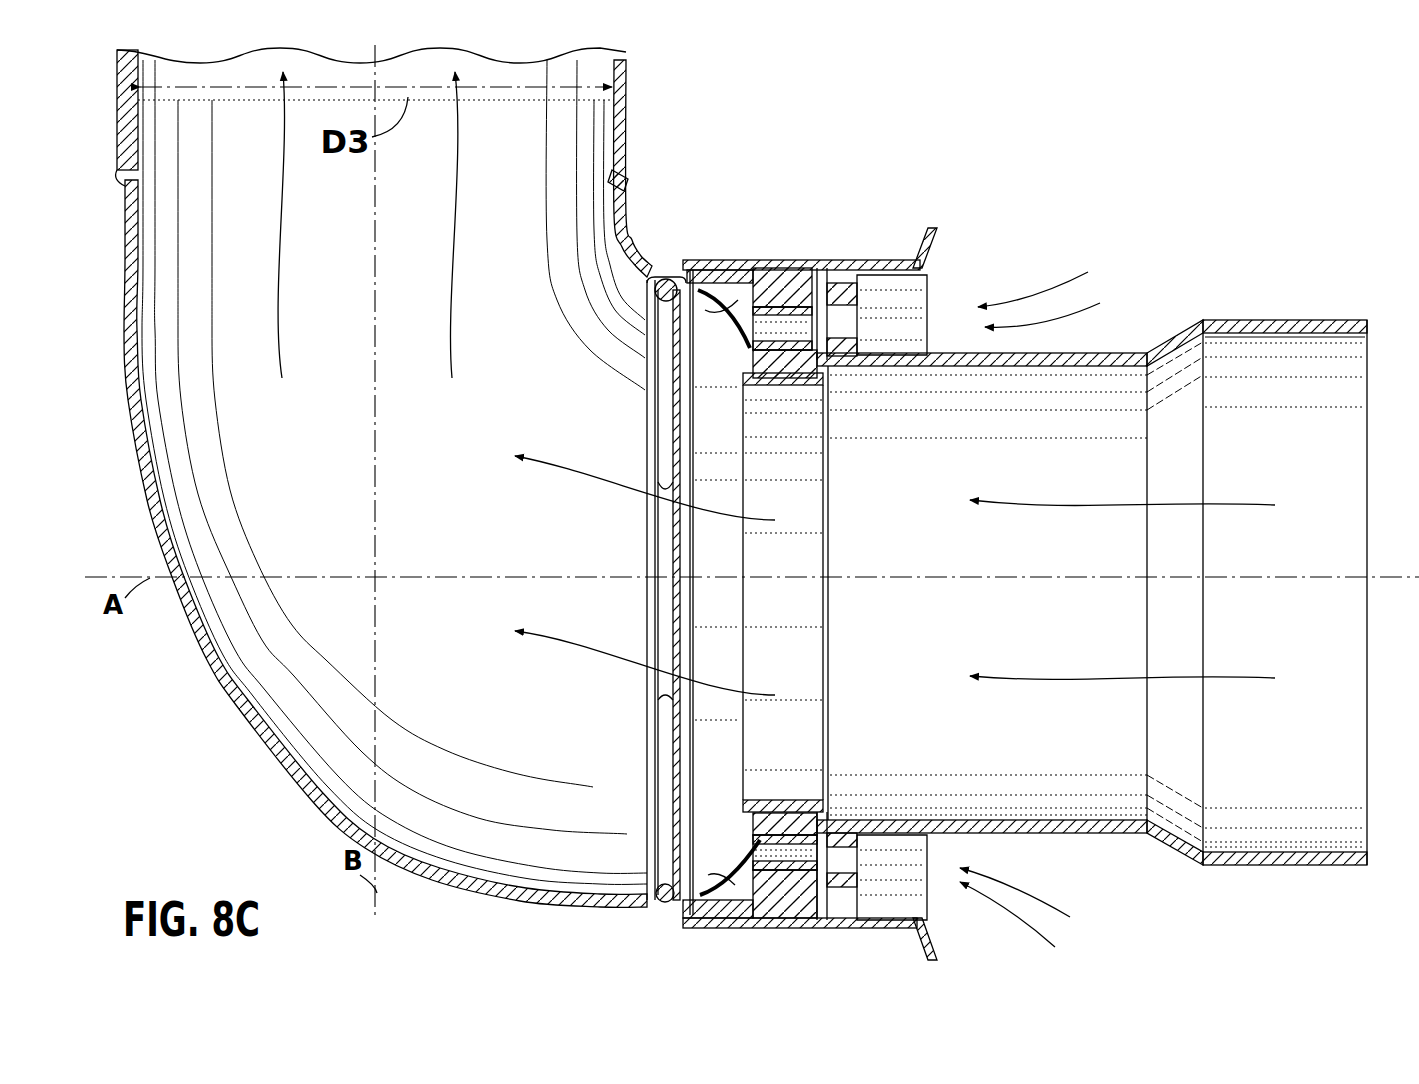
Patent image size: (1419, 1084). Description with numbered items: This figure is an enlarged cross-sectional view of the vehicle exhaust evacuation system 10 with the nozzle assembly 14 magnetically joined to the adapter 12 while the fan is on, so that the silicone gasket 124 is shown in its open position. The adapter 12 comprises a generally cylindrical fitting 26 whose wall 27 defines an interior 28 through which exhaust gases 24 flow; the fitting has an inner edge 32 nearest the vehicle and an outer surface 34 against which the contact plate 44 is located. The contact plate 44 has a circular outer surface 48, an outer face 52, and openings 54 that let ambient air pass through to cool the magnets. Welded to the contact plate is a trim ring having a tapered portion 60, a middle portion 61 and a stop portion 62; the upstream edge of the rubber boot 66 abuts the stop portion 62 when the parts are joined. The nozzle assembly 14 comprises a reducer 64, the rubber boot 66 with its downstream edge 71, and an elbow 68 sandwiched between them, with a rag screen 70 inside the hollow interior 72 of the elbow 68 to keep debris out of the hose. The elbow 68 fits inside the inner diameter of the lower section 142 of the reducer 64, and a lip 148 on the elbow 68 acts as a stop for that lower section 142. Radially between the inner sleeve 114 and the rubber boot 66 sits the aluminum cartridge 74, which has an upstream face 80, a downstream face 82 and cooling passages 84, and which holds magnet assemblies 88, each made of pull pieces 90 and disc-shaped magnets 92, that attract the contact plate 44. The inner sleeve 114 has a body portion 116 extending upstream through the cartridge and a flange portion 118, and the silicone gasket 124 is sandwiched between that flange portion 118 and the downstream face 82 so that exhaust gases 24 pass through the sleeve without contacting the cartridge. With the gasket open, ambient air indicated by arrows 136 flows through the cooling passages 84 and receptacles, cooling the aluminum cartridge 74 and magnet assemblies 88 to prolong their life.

The vehicle exhaust evacuation system 10 is at (1170, 176).
The adapter 12 is at (1073, 353).
The nozzle assembly 14 is at (790, 218).
The exhaust gases 24 is at (456, 320).
The generally cylindrical fitting 26 is at (1318, 322).
The wall 27 is at (1105, 352).
The interior 28 is at (1268, 616).
The inner edge 32 is at (1368, 352).
The outer surface 34 is at (1243, 320).
The contact plate 44 is at (925, 315).
The circular outer surface 48 is at (838, 296).
The outer face 52 is at (810, 828).
The openings 54 is at (930, 340).
The tapered portion 60 is at (828, 285).
The middle portion 61 is at (925, 290).
The stop portion 62 is at (928, 252).
The reducer 64 is at (630, 143).
The rubber boot 66 is at (686, 258).
The elbow 68 is at (320, 800).
The rag screen 70 is at (660, 452).
The downstream edge 71 is at (688, 922).
The hollow interior 72 is at (418, 463).
The aluminum cartridge 74 is at (823, 265).
The upstream face 80 is at (815, 838).
The downstream face 82 is at (745, 832).
The cooling passages 84 is at (778, 262).
The magnet assembly 88 is at (824, 331).
The pull pieces 90 is at (825, 857).
The disc-shaped magnets 92 is at (826, 869).
The inner sleeve 114 is at (830, 410).
The body portion 116 is at (797, 386).
The flange portion 118 is at (745, 372).
The silicone gasket 124 is at (688, 262).
The arrows 136 is at (762, 262).
The lower section 142 is at (628, 84).
The lip 148 is at (629, 180).